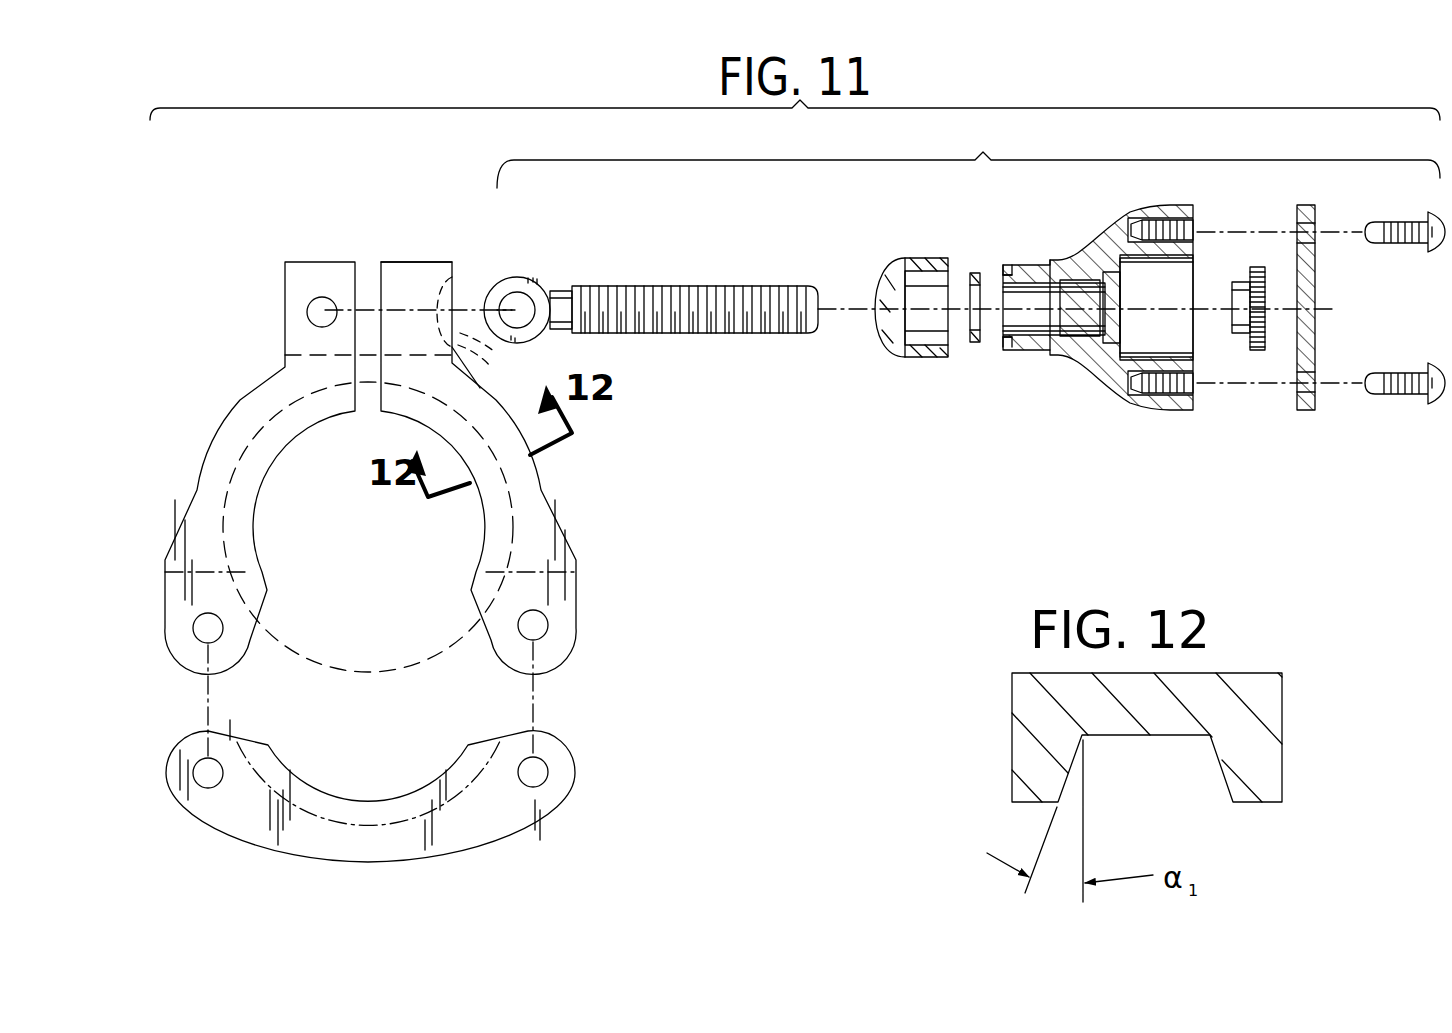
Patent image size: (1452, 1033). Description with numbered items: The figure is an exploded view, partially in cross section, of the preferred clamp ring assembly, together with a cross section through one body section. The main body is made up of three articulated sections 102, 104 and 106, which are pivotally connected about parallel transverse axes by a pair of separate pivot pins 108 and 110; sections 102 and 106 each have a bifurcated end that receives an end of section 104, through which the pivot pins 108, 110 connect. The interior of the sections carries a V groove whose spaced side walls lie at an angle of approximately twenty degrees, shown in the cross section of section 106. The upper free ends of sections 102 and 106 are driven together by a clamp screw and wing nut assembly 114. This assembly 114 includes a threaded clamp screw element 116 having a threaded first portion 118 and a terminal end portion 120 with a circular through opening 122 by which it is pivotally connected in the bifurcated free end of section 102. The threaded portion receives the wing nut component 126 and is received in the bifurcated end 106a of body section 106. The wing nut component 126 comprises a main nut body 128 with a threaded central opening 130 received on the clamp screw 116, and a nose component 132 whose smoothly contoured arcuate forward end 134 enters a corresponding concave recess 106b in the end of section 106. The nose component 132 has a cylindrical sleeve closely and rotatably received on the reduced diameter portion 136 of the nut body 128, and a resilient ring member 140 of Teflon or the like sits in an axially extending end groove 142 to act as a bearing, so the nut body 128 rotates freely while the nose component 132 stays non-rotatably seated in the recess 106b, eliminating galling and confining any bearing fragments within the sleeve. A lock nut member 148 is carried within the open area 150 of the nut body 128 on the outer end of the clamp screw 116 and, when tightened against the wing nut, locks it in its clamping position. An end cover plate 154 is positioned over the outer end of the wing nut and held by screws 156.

In FIG. 11, the articulated body section 102 is at (236, 396).
In FIG. 11, the articulated body section 104 is at (546, 824).
In FIG. 11, the articulated body section 106 is at (582, 522).
In FIG. 12, the articulated body section 106 is at (1282, 710).
In FIG. 11, the bifurcated end 106a is at (410, 262).
In FIG. 11, the concave recess 106b is at (496, 367).
In FIG. 11, the pivot pin 108 is at (192, 637).
In FIG. 11, the pivot pin 110 is at (545, 631).
In FIG. 11, the clamp screw and wing nut assembly 114 is at (968, 156).
In FIG. 11, the clamp screw element 116 is at (680, 334).
In FIG. 11, the threaded first portion 118 is at (700, 287).
In FIG. 11, the terminal end portion 120 is at (540, 285).
In FIG. 11, the circular through opening 122 is at (518, 303).
In FIG. 11, the wing nut component 126 is at (1096, 328).
In FIG. 11, the nut body 128 is at (1107, 383).
In FIG. 11, the threaded central opening 130 is at (1042, 313).
In FIG. 11, the nose component 132 is at (878, 256).
In FIG. 11, the arcuate forward end 134 is at (868, 352).
In FIG. 11, the reduced diameter portion 136 is at (1038, 258).
In FIG. 11, the resilient ring member 140 is at (977, 343).
In FIG. 11, the axially extending end groove 142 is at (1002, 273).
In FIG. 11, the lock nut member 148 is at (1257, 353).
In FIG. 11, the open area 150 is at (1195, 267).
In FIG. 11, the end cover plate 154 is at (1318, 290).
In FIG. 11, the screws 156 is at (1382, 233).